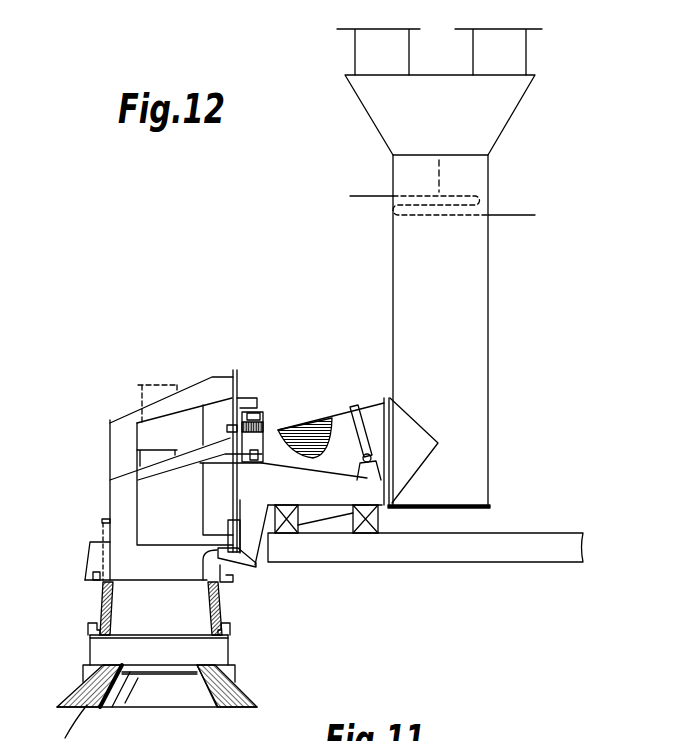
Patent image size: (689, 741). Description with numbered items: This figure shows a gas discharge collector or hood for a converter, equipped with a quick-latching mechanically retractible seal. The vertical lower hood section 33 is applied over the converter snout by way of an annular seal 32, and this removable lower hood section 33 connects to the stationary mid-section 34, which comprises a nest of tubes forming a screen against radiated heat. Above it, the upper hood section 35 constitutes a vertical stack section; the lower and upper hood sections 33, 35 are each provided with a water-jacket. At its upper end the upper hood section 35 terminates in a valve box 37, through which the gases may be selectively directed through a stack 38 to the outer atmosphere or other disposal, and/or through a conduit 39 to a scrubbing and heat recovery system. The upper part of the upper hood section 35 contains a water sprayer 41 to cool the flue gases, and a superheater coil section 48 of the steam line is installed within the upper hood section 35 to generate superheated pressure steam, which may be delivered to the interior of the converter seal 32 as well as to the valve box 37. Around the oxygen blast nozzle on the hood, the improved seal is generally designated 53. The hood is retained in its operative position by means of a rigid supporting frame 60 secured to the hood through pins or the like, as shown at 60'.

The annular seal 32 is at (230, 650).
The lower hood section 33 is at (100, 604).
The mid-section 34 is at (375, 403).
The upper hood section 35 is at (478, 389).
The valve box 37 is at (497, 124).
The stack 38 is at (360, 40).
The conduit 39 is at (505, 48).
The water sprayer 41 is at (440, 172).
The superheater coil section 48 is at (413, 217).
The seal around the oxygen blast nozzle 53 is at (153, 455).
The rigid supporting frame 60 is at (425, 546).
The pins 60' is at (269, 484).